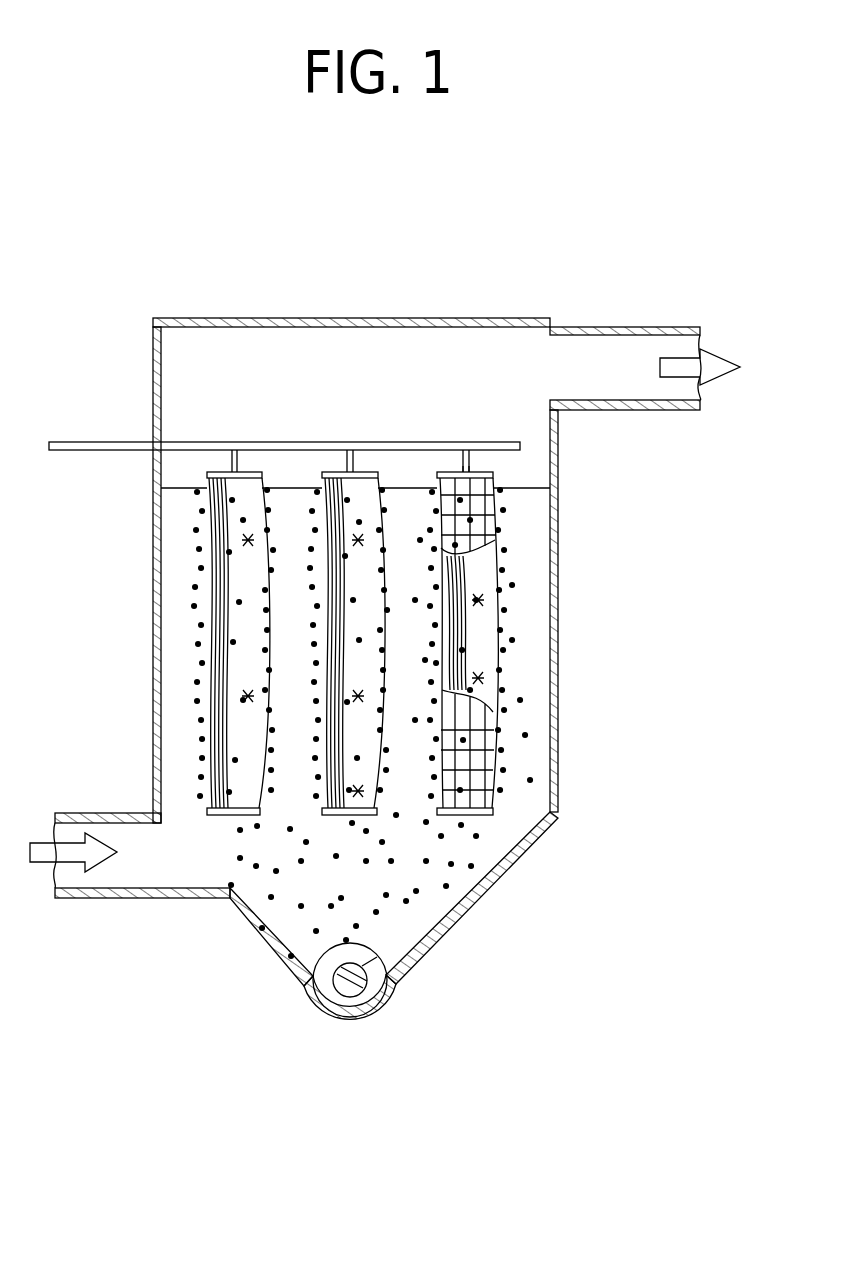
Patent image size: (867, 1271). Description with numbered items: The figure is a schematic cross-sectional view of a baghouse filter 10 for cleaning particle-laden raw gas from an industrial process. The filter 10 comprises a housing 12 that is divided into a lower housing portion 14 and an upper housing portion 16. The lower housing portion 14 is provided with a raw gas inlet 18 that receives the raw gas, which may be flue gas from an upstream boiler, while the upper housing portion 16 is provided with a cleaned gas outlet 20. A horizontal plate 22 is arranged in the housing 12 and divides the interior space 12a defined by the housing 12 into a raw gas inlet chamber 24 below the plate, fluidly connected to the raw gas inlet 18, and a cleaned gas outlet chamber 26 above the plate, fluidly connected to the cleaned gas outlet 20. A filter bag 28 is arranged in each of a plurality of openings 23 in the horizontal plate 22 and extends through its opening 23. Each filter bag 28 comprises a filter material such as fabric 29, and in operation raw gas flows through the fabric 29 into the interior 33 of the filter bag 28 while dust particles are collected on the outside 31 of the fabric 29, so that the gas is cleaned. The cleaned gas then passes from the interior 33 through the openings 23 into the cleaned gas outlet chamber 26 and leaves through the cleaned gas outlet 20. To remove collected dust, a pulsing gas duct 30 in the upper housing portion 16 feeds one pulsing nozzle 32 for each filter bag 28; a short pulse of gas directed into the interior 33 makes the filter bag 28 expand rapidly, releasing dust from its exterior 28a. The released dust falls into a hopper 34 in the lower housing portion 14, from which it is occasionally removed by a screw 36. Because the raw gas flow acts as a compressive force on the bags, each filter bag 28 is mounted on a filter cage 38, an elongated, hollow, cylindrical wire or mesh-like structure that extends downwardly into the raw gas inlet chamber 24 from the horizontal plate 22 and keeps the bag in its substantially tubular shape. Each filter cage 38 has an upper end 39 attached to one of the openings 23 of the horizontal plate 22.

The baghouse filter 10 is at (548, 182).
The housing 12 is at (580, 481).
The interior space 12a is at (167, 395).
The lower housing portion 14 is at (558, 545).
The upper housing portion 16 is at (488, 318).
The raw gas inlet 18 is at (88, 898).
The cleaned gas outlet 20 is at (628, 327).
The horizontal plate 22 is at (190, 488).
The openings 23 is at (272, 470).
The raw gas inlet chamber 24 is at (437, 883).
The cleaned gas outlet chamber 26 is at (258, 350).
The filter bag 28 is at (205, 662).
The exterior 28a is at (248, 755).
The fabric 29 is at (480, 643).
The pulsing gas duct 30 is at (287, 440).
The outside 31 is at (480, 568).
The pulsing nozzle 32 is at (477, 457).
The interior 33 is at (392, 745).
The hopper 34 is at (250, 920).
The screw 36 is at (357, 1003).
The filter cage 38 is at (498, 793).
The upper end 39 is at (490, 458).